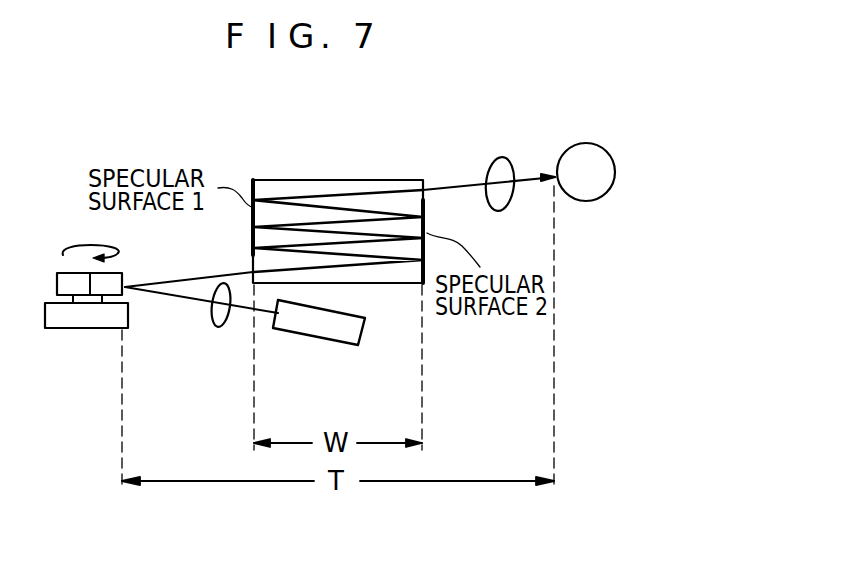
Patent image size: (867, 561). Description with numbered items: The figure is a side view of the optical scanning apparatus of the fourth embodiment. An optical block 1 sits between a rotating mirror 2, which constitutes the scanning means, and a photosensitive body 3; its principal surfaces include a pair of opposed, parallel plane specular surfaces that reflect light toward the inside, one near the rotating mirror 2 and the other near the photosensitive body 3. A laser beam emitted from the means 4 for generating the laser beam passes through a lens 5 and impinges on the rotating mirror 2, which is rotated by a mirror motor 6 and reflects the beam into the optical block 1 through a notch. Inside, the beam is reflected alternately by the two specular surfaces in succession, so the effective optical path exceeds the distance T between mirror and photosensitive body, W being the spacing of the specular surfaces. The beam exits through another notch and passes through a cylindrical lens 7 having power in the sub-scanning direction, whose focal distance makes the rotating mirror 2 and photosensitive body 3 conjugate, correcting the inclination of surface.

The optical block 1 is at (352, 182).
The rotating mirror 2 is at (57, 281).
The photosensitive body 3 is at (592, 200).
The means for generating laser beam 4 is at (352, 346).
The lens 5 is at (209, 328).
The mirror motor 6 is at (50, 330).
The cylindrical lens 7 is at (500, 156).